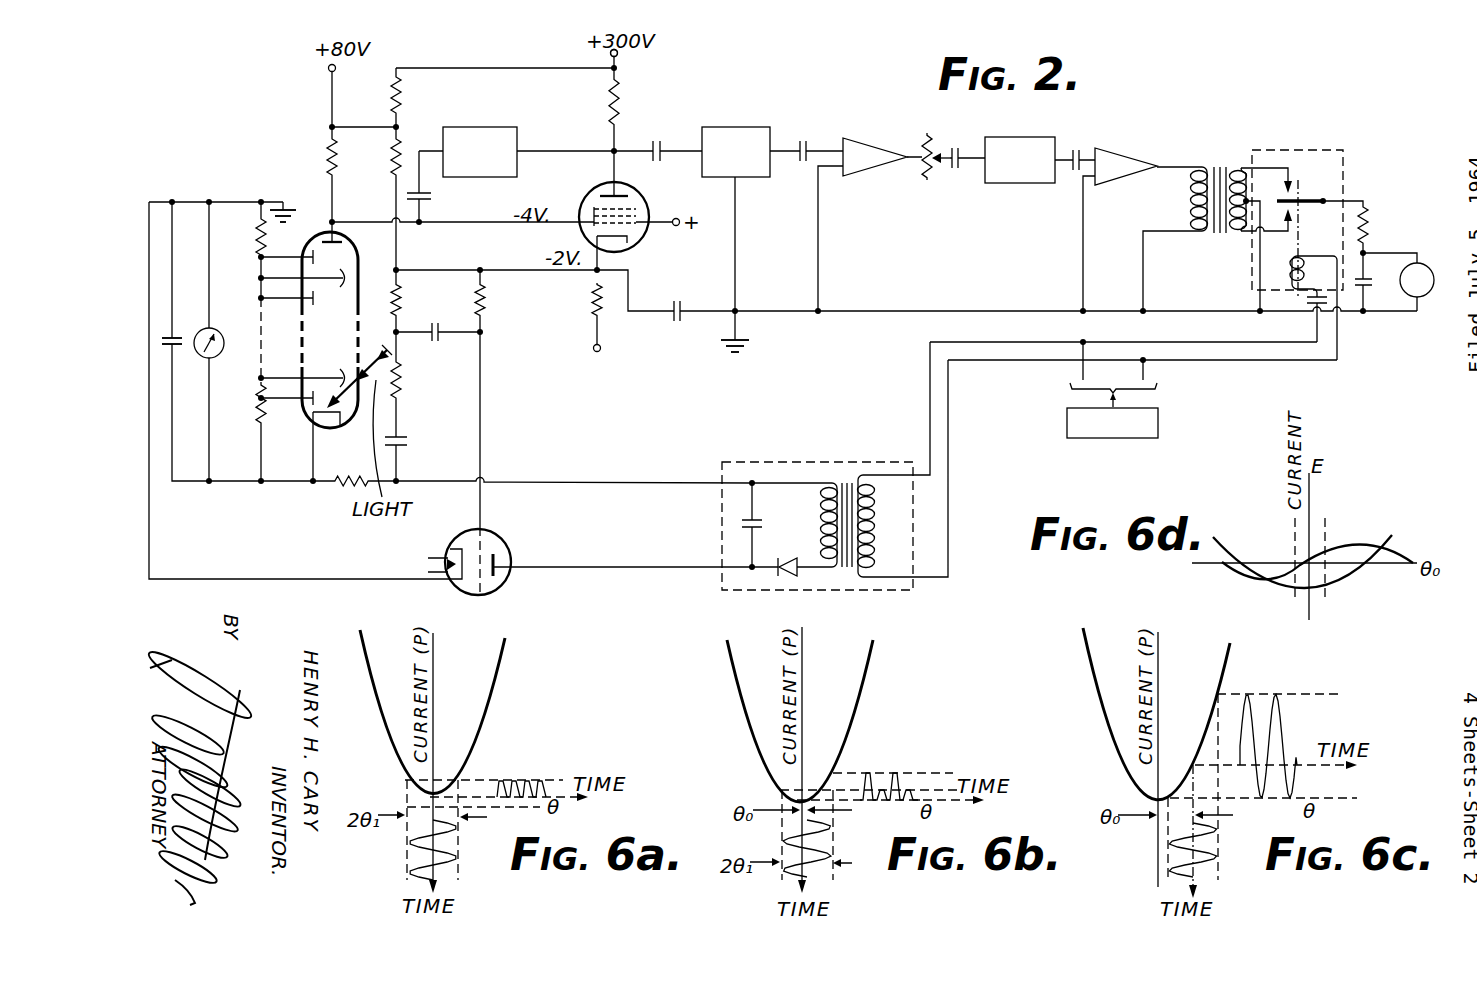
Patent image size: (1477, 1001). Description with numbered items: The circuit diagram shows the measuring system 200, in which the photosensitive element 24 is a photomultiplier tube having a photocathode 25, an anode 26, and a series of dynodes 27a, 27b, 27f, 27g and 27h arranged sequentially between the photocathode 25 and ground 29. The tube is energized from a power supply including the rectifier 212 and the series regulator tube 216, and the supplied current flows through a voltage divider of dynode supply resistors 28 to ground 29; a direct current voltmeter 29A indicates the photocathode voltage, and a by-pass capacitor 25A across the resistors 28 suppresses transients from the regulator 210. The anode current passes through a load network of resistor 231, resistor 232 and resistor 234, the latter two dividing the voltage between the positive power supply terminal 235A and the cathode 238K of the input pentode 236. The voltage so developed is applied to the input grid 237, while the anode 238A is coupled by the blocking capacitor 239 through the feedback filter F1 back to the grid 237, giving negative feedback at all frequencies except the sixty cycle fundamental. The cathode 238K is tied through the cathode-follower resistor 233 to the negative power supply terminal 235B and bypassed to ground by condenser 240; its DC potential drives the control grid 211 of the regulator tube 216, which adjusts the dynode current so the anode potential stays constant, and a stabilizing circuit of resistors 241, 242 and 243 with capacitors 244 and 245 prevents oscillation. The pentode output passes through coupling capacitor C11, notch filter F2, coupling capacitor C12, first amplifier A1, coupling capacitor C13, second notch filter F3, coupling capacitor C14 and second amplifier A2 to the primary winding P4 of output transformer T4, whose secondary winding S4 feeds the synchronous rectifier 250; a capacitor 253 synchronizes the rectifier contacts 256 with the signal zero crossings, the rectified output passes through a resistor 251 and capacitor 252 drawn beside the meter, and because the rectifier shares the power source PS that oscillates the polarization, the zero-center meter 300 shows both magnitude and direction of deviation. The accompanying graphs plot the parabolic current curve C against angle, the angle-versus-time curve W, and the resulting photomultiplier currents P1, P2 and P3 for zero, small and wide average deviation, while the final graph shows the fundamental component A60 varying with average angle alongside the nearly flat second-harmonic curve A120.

In FIG. 2, the measuring system 200 is at (286, 186).
In FIG. 2, the photosensitive element 24 is at (360, 268).
In FIG. 2, the photocathode 25 is at (334, 420).
In FIG. 2, the by-pass capacitor 25A is at (175, 336).
In FIG. 2, the anode 26 is at (328, 240).
In FIG. 2, the dynode 27a is at (312, 402).
In FIG. 2, the dynode 27b is at (344, 376).
In FIG. 2, the dynode 27f is at (313, 299).
In FIG. 2, the dynode 27g is at (343, 270).
In FIG. 2, the dynode 27h is at (312, 256).
In FIG. 2, the dynode supply resistors 28 is at (259, 276).
In FIG. 2, the ground 29 is at (283, 206).
In FIG. 2, the direct current voltmeter 29A is at (215, 358).
In FIG. 2, the regulator 210 is at (300, 550).
In FIG. 2, the control grid 211 is at (470, 552).
In FIG. 2, the rectifier 212 is at (745, 462).
In FIG. 2, the series regulator tube 216 is at (502, 536).
In FIG. 2, the resistor 231 is at (330, 142).
In FIG. 2, the resistor 232 is at (393, 160).
In FIG. 2, the cathode-follower resistor 233 is at (594, 306).
In FIG. 2, the resistor 234 is at (401, 90).
In FIG. 2, the positive power supply terminal 235A is at (618, 55).
In FIG. 2, the negative power supply terminal 235B is at (594, 350).
In FIG. 2, the input pentode 236 is at (587, 192).
In FIG. 2, the input grid 237 is at (632, 226).
In FIG. 2, the anode 238A is at (626, 188).
In FIG. 2, the cathode 238K is at (628, 240).
In FIG. 2, the blocking capacitor 239 is at (432, 196).
In FIG. 2, the by-pass condenser 240 is at (675, 320).
In FIG. 2, the resistor 241 is at (485, 308).
In FIG. 2, the resistor 242 is at (400, 300).
In FIG. 2, the resistor 243 is at (400, 390).
In FIG. 2, the capacitor 244 is at (436, 342).
In FIG. 2, the capacitor 245 is at (408, 442).
In FIG. 2, the synchronous rectifier 250 is at (1296, 150).
In FIG. 2, the resistor 251 is at (1370, 230).
In FIG. 2, the capacitor 252 is at (1374, 282).
In FIG. 2, the capacitor 253 is at (1306, 300).
In FIG. 2, the rectifier contacts 256 is at (1294, 213).
In FIG. 2, the zero-center meter 300 is at (1420, 297).
In FIG. 2, the coupling capacitor C11 is at (654, 141).
In FIG. 2, the coupling capacitor C12 is at (803, 141).
In FIG. 2, the coupling capacitor C13 is at (957, 148).
In FIG. 2, the coupling capacitor C14 is at (1079, 150).
In FIG. 2, the feedback filter F1 is at (480, 152).
In FIG. 2, the notch filter F2 is at (736, 152).
In FIG. 2, the second notch filter F3 is at (1020, 160).
In FIG. 2, the first amplifier A1 is at (875, 157).
In FIG. 2, the second amplifier A2 is at (1126, 166).
In FIG. 2, the primary winding P4 is at (1192, 200).
In FIG. 2, the secondary winding S4 is at (1237, 232).
In FIG. 2, the output transformer T4 is at (1221, 165).
In FIG. 2, the power source PS is at (1067, 415).
In FIG. 6A, the curve C is at (498, 690).
In FIG. 6B, the curve C is at (868, 692).
In FIG. 6C, the curve C is at (1228, 665).
In FIG. 6A, the photomultiplier current P1 is at (547, 782).
In FIG. 6B, the photomultiplier current P2 is at (900, 778).
In FIG. 6C, the photomultiplier current P3 is at (1283, 723).
In FIG. 6A, the curve W is at (456, 840).
In FIG. 6B, the curve W is at (833, 840).
In FIG. 6C, the curve W is at (1218, 843).
In FIG. 6D, the 60 cps component A60 is at (1365, 552).
In FIG. 6D, the curve A120 is at (1345, 578).